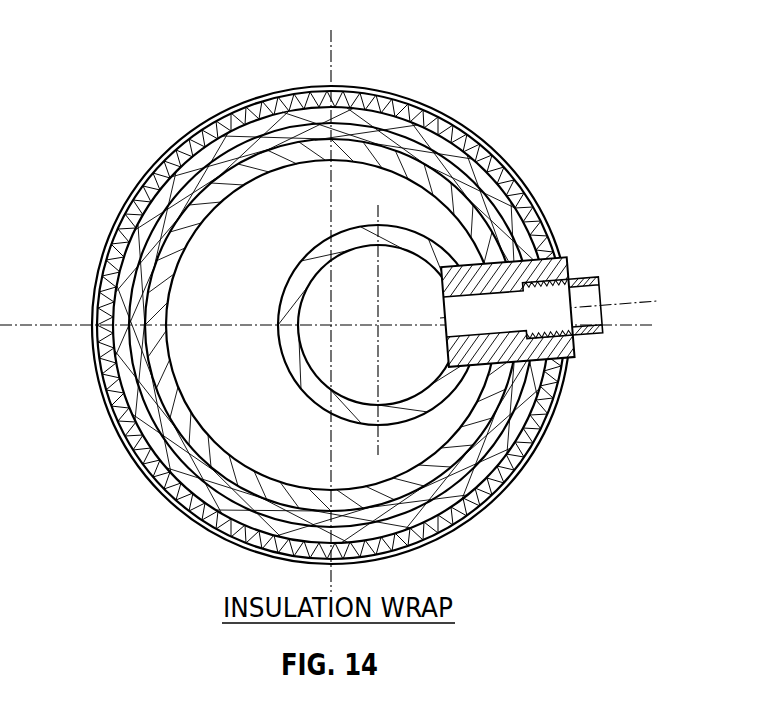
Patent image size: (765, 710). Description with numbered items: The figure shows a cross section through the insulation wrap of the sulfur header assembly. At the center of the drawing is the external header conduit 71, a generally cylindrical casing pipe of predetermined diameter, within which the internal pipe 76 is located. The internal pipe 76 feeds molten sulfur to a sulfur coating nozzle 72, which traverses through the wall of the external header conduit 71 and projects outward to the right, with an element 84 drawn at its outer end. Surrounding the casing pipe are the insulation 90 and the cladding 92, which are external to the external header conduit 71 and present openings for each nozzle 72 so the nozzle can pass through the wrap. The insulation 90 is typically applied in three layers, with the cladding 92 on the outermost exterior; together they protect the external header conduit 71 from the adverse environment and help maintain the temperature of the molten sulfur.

The cladding 92 is at (192, 127).
The insulation 90 is at (317, 118).
The internal pipe 76 is at (317, 243).
The sulfur coating nozzle 72 is at (567, 252).
The pipe 84 is at (597, 272).
The external header conduit 71 is at (198, 462).